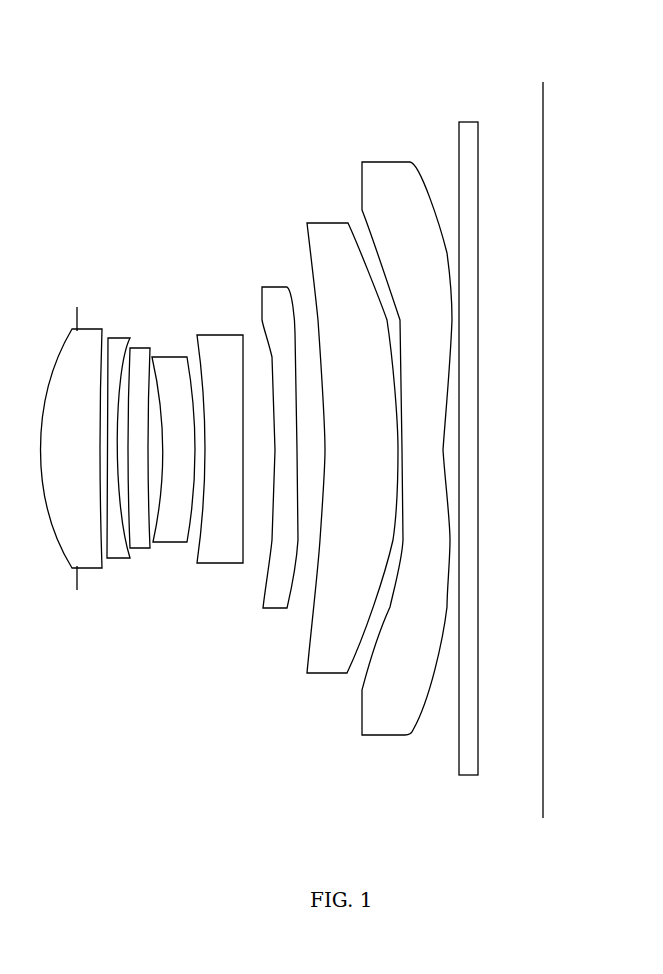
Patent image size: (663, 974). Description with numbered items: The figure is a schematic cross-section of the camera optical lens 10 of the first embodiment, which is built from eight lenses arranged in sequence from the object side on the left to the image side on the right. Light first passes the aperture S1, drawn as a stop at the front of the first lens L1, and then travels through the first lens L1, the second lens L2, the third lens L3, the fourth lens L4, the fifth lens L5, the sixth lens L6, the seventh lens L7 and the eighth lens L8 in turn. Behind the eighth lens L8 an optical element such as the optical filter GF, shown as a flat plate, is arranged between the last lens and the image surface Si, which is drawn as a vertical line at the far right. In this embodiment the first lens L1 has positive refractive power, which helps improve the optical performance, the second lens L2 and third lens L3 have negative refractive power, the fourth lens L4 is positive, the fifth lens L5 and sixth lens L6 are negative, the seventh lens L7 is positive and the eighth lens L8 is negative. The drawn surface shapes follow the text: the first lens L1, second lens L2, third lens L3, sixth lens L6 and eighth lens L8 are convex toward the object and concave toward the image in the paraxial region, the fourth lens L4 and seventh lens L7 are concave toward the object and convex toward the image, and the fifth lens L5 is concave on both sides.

The camera optical lens 10 is at (362, 27).
The aperture S1 is at (74, 433).
The first lens L1 is at (72, 434).
The second lens L2 is at (118, 436).
The third lens L3 is at (140, 436).
The fourth lens L4 is at (173, 438).
The fifth lens L5 is at (220, 437).
The sixth lens L6 is at (280, 434).
The seventh lens L7 is at (352, 433).
The eighth lens L8 is at (407, 435).
The optical filter GF is at (466, 433).
The image surface Si is at (545, 435).